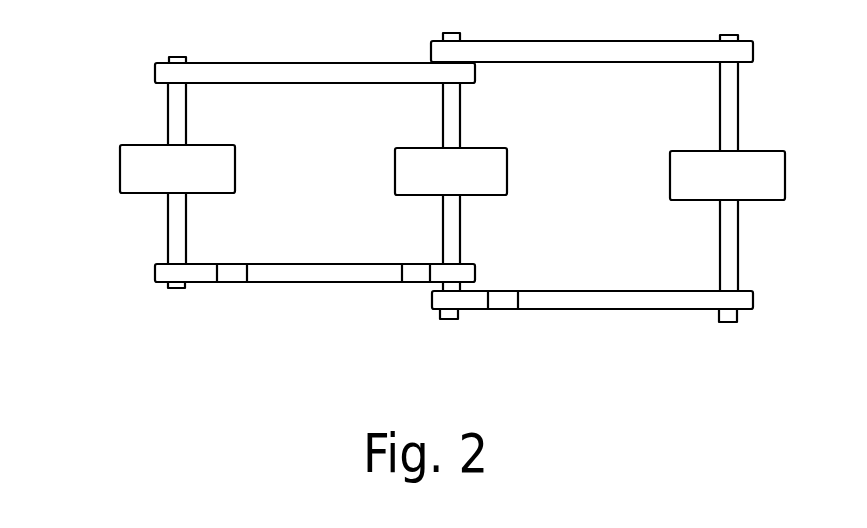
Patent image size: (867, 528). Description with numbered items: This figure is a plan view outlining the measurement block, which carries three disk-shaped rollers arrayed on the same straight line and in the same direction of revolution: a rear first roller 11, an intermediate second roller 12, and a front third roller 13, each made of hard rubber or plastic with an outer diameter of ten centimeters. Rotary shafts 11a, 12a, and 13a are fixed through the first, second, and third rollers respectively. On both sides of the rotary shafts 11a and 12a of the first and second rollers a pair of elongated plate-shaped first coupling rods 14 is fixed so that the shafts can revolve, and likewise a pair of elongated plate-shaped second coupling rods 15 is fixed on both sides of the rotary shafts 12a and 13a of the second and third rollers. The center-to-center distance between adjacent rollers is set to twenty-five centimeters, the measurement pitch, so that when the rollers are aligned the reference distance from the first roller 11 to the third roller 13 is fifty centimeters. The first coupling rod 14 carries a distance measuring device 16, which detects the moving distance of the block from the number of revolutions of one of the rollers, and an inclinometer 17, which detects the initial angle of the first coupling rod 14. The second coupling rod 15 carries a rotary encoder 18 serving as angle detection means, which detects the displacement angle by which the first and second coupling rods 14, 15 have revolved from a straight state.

The first roller 11 is at (120, 172).
The rotary shaft 11a is at (168, 110).
The second roller 12 is at (395, 171).
The rotary shaft 12a is at (443, 122).
The third roller 13 is at (670, 177).
The rotary shaft 13a is at (720, 92).
The first coupling rod 14 is at (295, 282).
The second coupling rod 15 is at (575, 310).
The distance measuring device 16 is at (413, 283).
The inclinometer 17 is at (228, 282).
The rotary encoder 18 is at (498, 300).